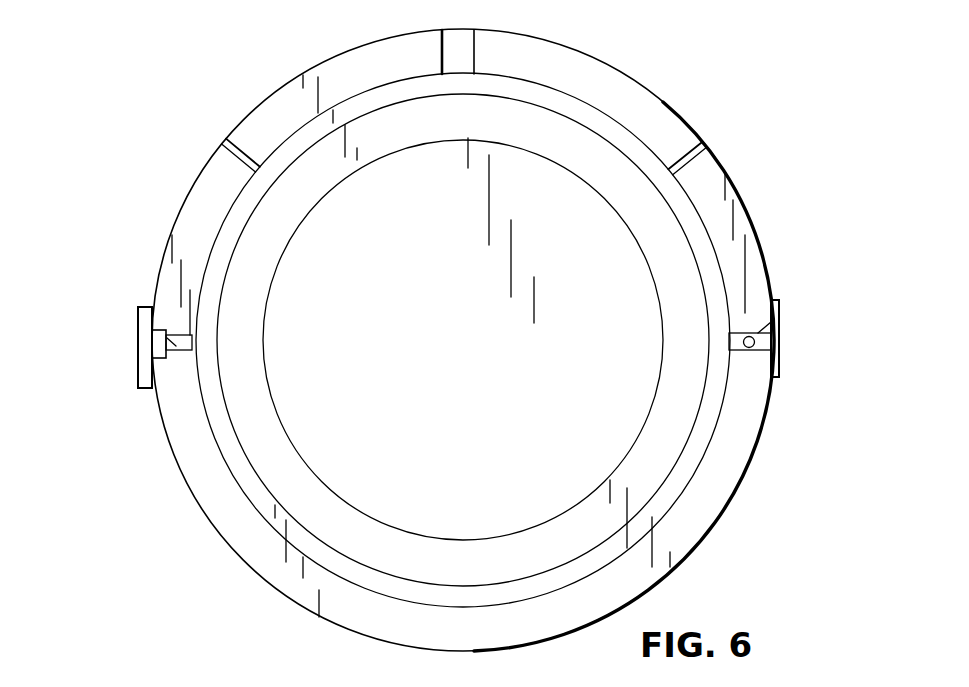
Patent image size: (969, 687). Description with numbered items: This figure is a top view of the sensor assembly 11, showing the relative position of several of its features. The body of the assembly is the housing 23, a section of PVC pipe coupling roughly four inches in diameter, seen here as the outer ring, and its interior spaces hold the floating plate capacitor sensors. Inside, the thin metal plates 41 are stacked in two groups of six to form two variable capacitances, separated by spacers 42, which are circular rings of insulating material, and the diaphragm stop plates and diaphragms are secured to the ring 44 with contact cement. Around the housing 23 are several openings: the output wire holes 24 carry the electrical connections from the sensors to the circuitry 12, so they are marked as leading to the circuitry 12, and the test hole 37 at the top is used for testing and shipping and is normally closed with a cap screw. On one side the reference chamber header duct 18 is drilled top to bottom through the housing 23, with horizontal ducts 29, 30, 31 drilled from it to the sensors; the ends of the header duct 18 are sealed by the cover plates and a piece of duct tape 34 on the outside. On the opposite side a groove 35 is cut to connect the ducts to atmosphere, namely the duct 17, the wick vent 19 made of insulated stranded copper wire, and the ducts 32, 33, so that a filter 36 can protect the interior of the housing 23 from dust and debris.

The sensor assembly 11 is at (461, 340).
The circuitry 12 is at (231, 143).
The duct 17 is at (103, 354).
The reference chamber header duct 18 is at (773, 305).
The wick vent 19 is at (103, 354).
The housing 23 is at (708, 531).
The output wire holes 24 is at (465, 155).
The duct 29 is at (811, 361).
The duct 30 is at (811, 361).
The duct 31 is at (811, 361).
The duct to atmosphere 32 is at (103, 354).
The duct to atmosphere 33 is at (103, 354).
The duct tape 34 is at (772, 352).
The groove 35 is at (153, 357).
The filter 36 is at (140, 348).
The test hole 37 is at (458, 48).
The thin metal plates 41 is at (505, 389).
The spacers 42 is at (467, 581).
The ring 44 is at (331, 561).